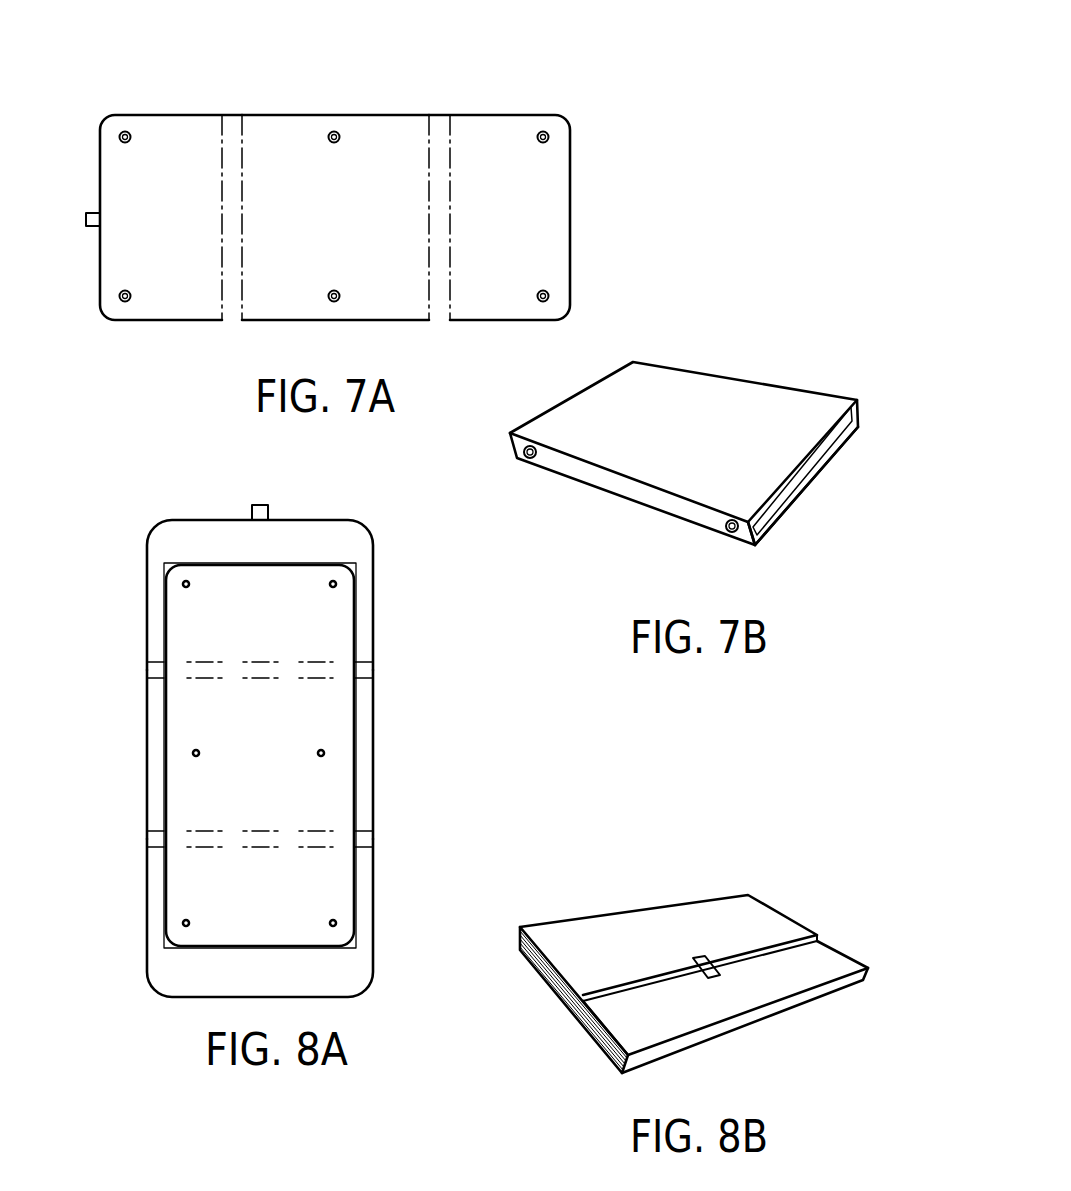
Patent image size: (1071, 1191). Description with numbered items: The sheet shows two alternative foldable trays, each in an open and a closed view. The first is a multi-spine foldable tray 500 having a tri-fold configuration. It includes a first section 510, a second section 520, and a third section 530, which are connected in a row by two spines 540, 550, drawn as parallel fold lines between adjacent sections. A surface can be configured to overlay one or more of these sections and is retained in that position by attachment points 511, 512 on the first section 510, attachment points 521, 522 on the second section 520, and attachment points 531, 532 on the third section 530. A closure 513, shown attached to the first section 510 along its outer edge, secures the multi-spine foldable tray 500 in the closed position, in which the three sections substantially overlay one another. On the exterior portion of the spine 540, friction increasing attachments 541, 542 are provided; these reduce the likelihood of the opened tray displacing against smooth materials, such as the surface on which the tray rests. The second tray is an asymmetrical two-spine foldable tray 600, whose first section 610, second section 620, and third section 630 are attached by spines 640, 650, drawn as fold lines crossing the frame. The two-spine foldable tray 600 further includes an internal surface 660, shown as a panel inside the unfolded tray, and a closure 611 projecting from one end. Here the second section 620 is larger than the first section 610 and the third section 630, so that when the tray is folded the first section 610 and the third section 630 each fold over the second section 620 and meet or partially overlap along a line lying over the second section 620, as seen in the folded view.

In FIG. 7A, the multi-spine foldable tray 500 is at (172, 72).
In FIG. 7B, the multi-spine foldable tray 500 is at (755, 328).
In FIG. 7A, the first section 510 is at (170, 113).
In FIG. 7B, the first section 510 is at (633, 362).
In FIG. 7A, the attachment point 511 is at (125, 137).
In FIG. 7A, the attachment point 512 is at (125, 302).
In FIG. 7A, the closure 513 is at (86, 214).
In FIG. 7A, the second section 520 is at (360, 114).
In FIG. 7B, the second section 520 is at (847, 438).
In FIG. 7A, the attachment point 521 is at (334, 131).
In FIG. 7A, the attachment point 522 is at (340, 303).
In FIG. 7A, the third section 530 is at (497, 114).
In FIG. 7B, the third section 530 is at (793, 505).
In FIG. 7A, the attachment point 531 is at (549, 137).
In FIG. 7A, the attachment point 532 is at (549, 296).
In FIG. 7A, the spine 540 is at (234, 310).
In FIG. 7B, the spine 540 is at (607, 480).
In FIG. 7B, the friction increasing attachment 541 is at (527, 458).
In FIG. 7B, the friction increasing attachment 542 is at (729, 533).
In FIG. 7A, the spine 550 is at (441, 310).
In FIG. 7B, the spine 550 is at (855, 415).
In FIG. 8A, the two-spine foldable tray 600 is at (122, 512).
In FIG. 8B, the two-spine foldable tray 600 is at (732, 838).
In FIG. 8A, the first section 610 is at (368, 551).
In FIG. 8B, the first section 610 is at (550, 927).
In FIG. 8A, the closure 611 is at (262, 503).
In FIG. 8B, the closure 611 is at (700, 965).
In FIG. 8A, the second section 620 is at (368, 743).
In FIG. 8A, the third section 630 is at (368, 870).
In FIG. 8B, the third section 630 is at (818, 958).
In FIG. 8A, the spine 640 is at (147, 665).
In FIG. 8B, the spine 640 is at (520, 936).
In FIG. 8A, the spine 650 is at (147, 835).
In FIG. 8B, the spine 650 is at (758, 1018).
In FIG. 8A, the internal surface 660 is at (334, 632).
In FIG. 8B, the internal surface 660 is at (540, 975).